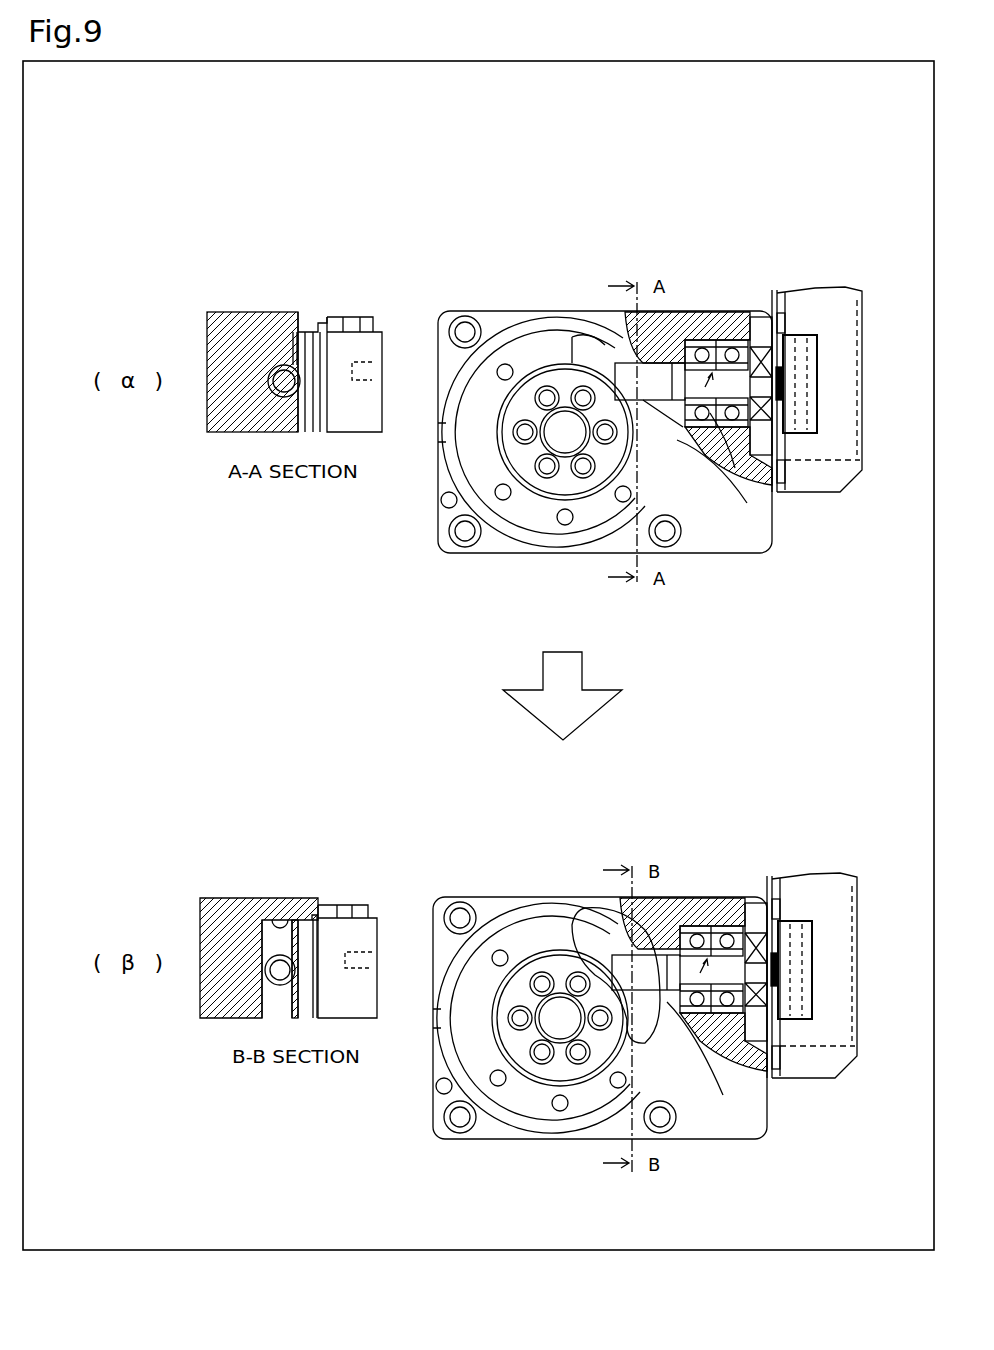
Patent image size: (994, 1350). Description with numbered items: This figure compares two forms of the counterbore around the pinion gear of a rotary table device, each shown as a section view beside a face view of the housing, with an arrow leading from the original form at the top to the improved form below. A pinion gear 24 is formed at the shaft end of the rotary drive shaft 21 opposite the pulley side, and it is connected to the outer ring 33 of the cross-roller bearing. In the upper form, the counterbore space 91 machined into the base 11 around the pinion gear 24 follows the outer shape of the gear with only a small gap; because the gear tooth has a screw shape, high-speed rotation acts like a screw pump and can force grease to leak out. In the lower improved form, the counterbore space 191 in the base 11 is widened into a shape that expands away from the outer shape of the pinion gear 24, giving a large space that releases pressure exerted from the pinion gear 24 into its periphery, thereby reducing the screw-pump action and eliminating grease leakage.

The base 11 is at (206, 338).
The counterbore space 91 is at (281, 375).
The pinion gear 24 is at (284, 375).
The outer ring 33 is at (353, 342).
The rotary drive shaft 21 is at (749, 470).
The counterbore space 191 is at (282, 928).